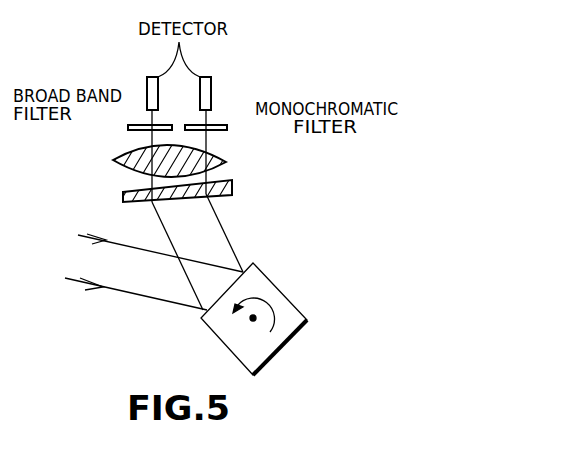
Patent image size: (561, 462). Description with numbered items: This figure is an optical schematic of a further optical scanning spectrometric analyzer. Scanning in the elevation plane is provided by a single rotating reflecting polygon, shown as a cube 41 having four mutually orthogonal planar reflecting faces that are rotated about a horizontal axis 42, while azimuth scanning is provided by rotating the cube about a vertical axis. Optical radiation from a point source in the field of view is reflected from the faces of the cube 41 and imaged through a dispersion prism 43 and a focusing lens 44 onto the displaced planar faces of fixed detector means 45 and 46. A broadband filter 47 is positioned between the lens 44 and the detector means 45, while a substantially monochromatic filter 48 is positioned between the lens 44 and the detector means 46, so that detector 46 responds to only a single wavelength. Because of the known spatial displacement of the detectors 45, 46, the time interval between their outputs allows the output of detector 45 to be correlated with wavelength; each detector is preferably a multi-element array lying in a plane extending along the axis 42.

The cube 41 is at (280, 345).
The horizontal axis 42 is at (251, 322).
The dispersion prism 43 is at (234, 188).
The focusing lens 44 is at (226, 162).
The radiation detector means 45 is at (147, 78).
The radiation detector means 46 is at (211, 78).
The broadband filter 47 is at (128, 126).
The monochromatic filter 48 is at (227, 127).